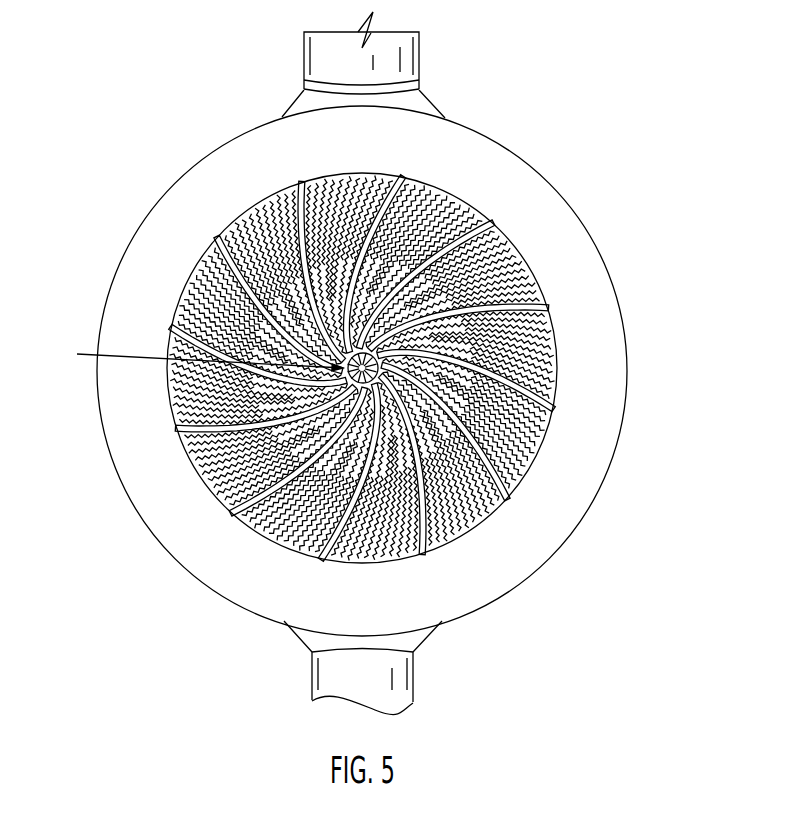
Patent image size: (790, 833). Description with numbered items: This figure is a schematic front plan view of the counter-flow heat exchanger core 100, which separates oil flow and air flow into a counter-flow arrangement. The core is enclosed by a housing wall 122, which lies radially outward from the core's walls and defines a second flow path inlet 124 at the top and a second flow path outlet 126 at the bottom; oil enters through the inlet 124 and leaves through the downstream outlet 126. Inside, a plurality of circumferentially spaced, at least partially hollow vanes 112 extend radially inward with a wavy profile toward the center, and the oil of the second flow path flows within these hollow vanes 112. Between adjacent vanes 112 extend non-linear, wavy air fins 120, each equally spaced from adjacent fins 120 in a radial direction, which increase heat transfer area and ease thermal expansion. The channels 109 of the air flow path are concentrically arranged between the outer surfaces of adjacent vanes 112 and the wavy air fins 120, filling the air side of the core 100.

The counter-flow heat exchanger core 100 is at (350, 364).
The channels 109 is at (183, 287).
The hollow vanes 112 is at (548, 313).
The non-linear fins 120 is at (535, 458).
The housing wall 122 is at (626, 425).
The second flow path inlet 124 is at (403, 32).
The second flow path outlet 126 is at (388, 718).